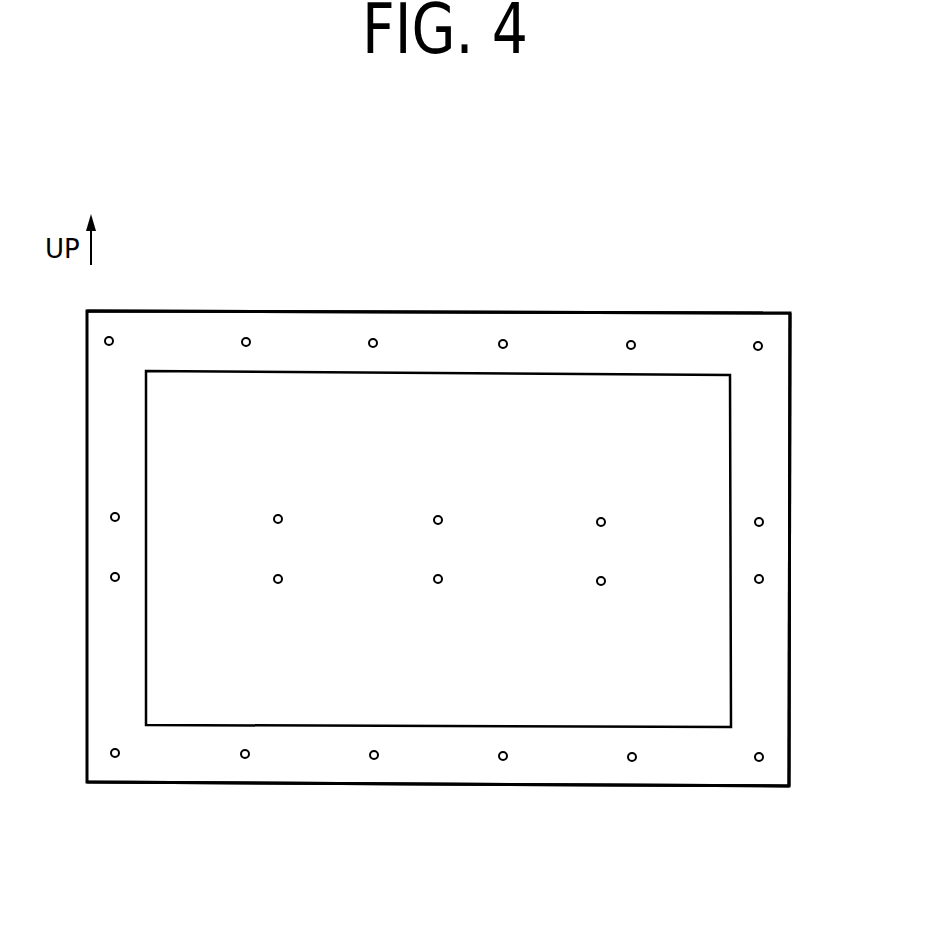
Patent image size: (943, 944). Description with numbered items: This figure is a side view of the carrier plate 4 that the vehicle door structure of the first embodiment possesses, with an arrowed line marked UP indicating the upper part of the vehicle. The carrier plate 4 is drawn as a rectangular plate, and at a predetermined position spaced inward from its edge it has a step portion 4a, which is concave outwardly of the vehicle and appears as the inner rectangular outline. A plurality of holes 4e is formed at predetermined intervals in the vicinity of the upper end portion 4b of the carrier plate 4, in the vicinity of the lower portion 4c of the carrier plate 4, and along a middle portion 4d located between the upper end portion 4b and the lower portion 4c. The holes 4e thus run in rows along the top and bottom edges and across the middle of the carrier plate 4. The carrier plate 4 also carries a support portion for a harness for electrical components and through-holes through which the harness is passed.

The carrier plate 4 is at (262, 787).
The step portion 4a is at (577, 727).
The upper end portion 4b is at (592, 313).
The lower portion 4c is at (510, 785).
The middle portion 4d is at (763, 542).
The holes 4e is at (762, 346).